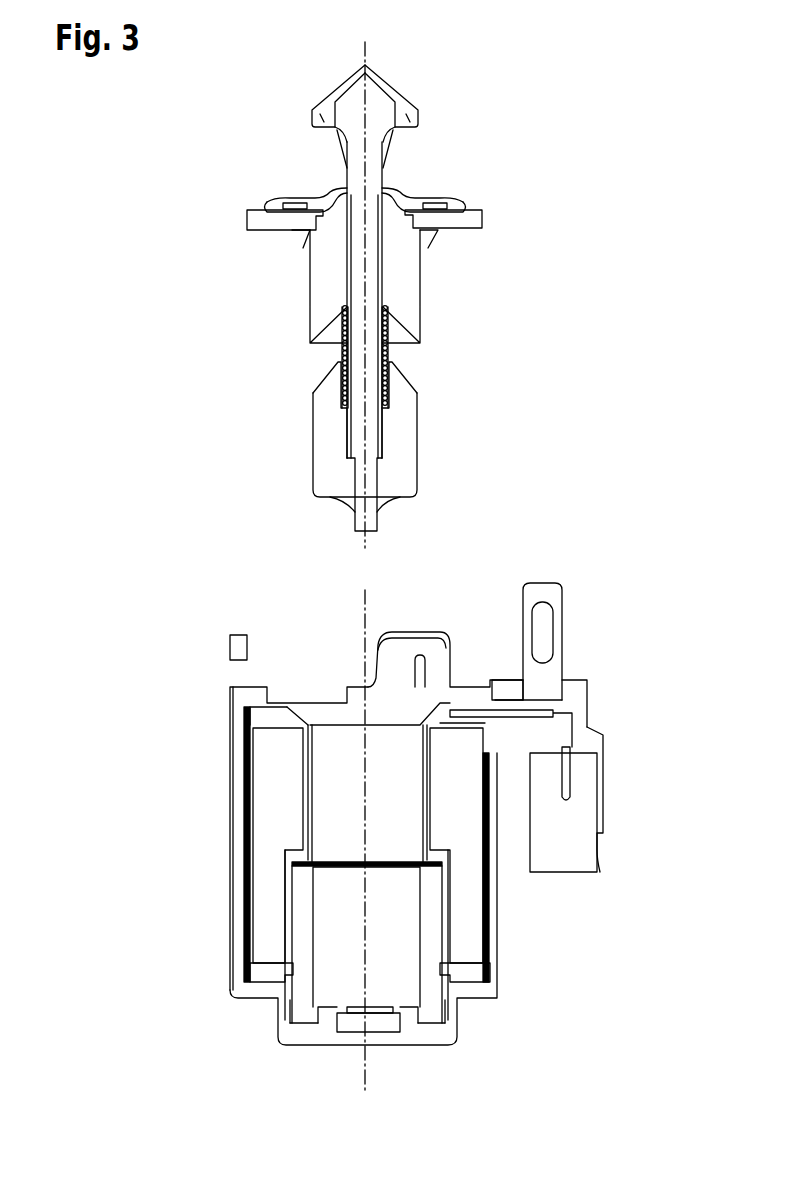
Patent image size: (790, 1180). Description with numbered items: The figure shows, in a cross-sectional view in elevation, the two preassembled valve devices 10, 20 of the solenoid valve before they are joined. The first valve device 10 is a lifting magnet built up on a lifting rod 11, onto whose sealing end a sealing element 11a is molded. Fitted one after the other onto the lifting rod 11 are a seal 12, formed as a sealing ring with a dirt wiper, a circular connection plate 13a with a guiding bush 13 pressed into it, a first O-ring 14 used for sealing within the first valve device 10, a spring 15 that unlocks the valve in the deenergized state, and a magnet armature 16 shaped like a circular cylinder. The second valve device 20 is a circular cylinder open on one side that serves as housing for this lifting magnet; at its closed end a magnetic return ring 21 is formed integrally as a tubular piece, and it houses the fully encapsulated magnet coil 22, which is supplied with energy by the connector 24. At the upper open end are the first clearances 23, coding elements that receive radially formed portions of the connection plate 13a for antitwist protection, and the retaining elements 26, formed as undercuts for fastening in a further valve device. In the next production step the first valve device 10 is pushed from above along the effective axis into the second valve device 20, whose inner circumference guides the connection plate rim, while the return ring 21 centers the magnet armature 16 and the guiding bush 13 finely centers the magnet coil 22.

The first valve device 10 is at (418, 298).
The lifting rod 11 is at (376, 432).
The sealing element 11a is at (403, 103).
The seal 12 is at (448, 203).
The guiding bush 13 is at (410, 302).
The connection plate 13a is at (482, 219).
The first O-ring 14 is at (433, 240).
The spring 15 is at (392, 356).
The magnet armature 16 is at (408, 465).
The second valve device 20 is at (359, 823).
The return ring 21 is at (305, 1013).
The magnet coil 22 is at (270, 780).
The first clearances 23 is at (297, 693).
The connector 24 is at (585, 820).
The retaining elements 26 is at (445, 652).